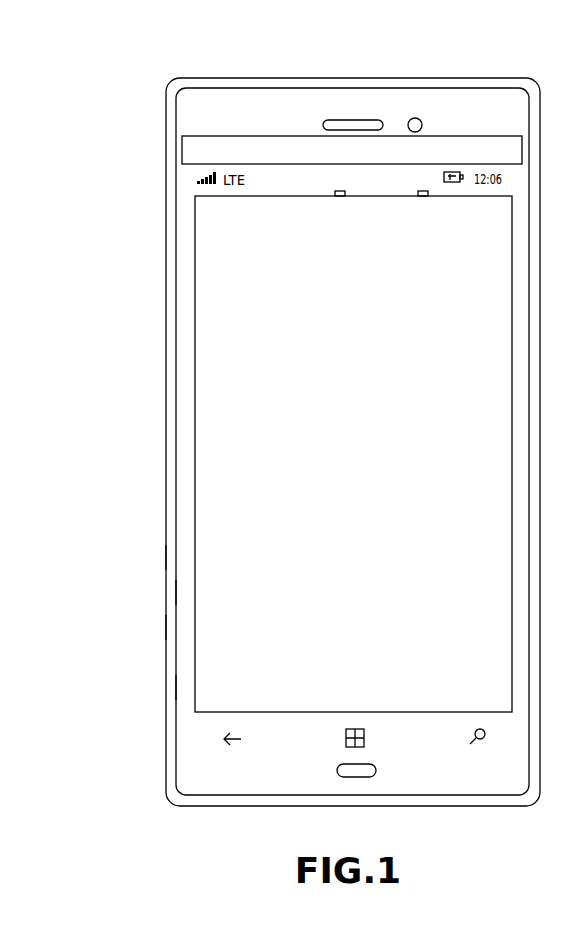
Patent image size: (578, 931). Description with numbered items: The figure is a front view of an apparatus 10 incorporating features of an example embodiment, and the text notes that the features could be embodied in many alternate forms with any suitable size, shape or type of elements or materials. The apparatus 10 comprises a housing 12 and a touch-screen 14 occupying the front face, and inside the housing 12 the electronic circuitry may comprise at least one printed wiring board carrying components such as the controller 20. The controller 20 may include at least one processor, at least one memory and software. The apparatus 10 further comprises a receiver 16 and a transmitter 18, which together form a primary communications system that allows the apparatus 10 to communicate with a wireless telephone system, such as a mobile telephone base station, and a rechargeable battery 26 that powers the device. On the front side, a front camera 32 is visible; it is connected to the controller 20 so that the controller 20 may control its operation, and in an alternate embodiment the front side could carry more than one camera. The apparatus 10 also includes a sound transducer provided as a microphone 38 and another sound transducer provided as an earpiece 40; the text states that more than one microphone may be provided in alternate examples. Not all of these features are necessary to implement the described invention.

The apparatus 10 is at (126, 143).
The housing 12 is at (167, 375).
The touch-screen 14 is at (230, 508).
The receiver 16 is at (166, 557).
The transmitter 18 is at (166, 592).
The controller 20 is at (166, 625).
The rechargeable battery 26 is at (166, 685).
The front camera 32 is at (421, 120).
The microphone 38 is at (360, 777).
The earpiece 40 is at (345, 120).